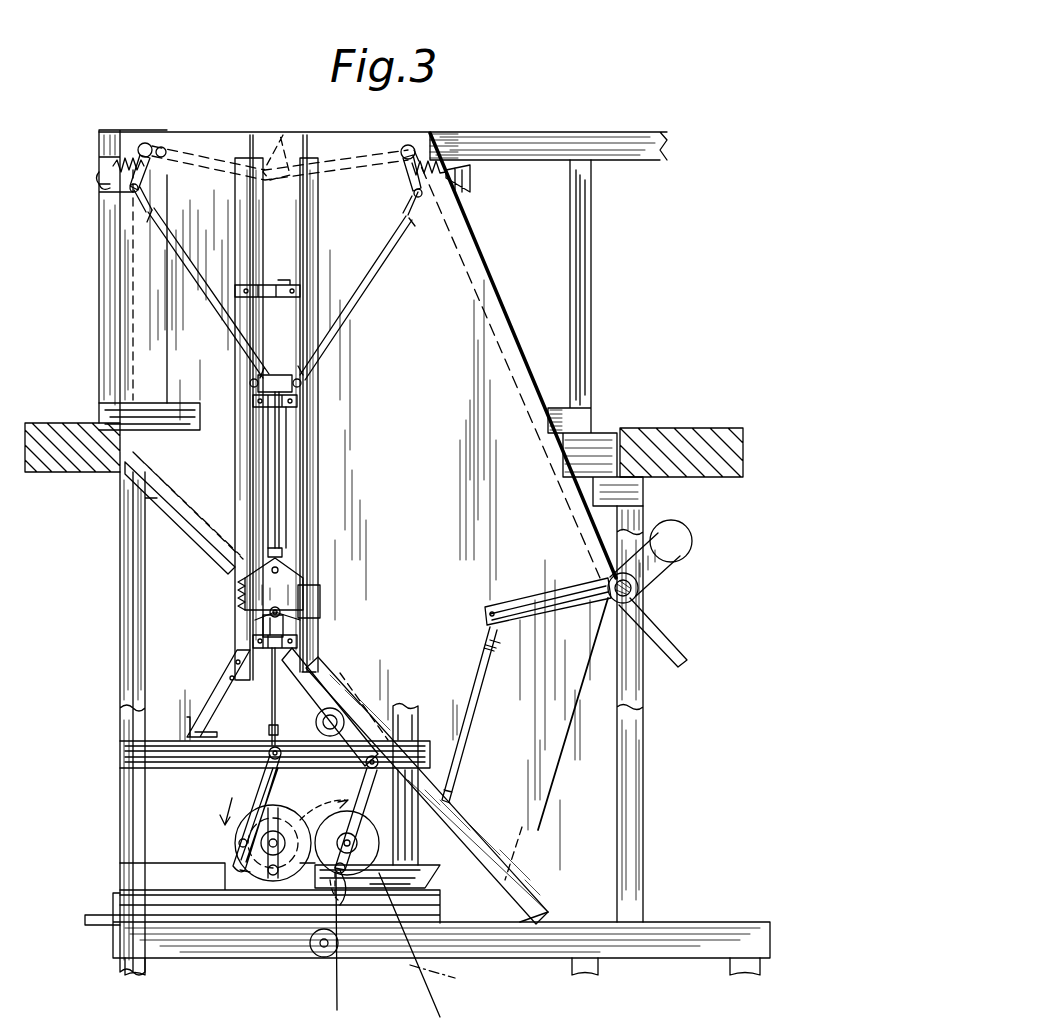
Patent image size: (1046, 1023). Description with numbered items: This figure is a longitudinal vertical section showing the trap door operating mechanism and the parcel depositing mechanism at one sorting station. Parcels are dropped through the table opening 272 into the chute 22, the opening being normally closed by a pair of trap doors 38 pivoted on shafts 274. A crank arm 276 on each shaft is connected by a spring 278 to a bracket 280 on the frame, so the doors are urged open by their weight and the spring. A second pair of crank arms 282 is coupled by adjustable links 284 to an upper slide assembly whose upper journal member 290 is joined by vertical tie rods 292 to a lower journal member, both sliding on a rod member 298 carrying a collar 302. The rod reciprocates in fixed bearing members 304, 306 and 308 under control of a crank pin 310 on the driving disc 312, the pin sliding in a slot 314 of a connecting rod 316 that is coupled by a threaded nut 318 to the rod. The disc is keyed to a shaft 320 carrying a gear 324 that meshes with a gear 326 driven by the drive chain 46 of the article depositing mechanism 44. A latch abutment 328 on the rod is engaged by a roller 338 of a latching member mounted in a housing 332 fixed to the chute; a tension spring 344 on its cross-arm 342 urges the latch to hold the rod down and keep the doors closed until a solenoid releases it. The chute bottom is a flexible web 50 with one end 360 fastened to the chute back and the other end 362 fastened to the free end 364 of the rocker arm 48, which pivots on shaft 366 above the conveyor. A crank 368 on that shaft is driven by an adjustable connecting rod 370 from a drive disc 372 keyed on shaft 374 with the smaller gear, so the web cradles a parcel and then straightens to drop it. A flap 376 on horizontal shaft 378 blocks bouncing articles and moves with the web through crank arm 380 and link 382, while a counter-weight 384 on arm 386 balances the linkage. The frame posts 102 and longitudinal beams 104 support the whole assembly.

The chute 22 is at (500, 312).
The trap doors 38 is at (285, 136).
The article depositing mechanism 44 is at (565, 783).
The drive chain 46 is at (393, 959).
The rocker arm 48 is at (500, 895).
The flexible web 50 is at (360, 664).
The posts 102 is at (120, 590).
The longitudinal horizontal beams 104 is at (680, 925).
The opening 272 is at (250, 112).
The shafts 274 is at (145, 143).
The crank arm 276 is at (185, 122).
The spring 278 is at (113, 166).
The bracket 280 is at (99, 182).
The crank arms 282 is at (147, 182).
The adjustable links 284 is at (193, 287).
The upper journal member 290 is at (295, 386).
The vertical tie rods 292 is at (265, 440).
The rod member 298 is at (280, 474).
The collar 302 is at (320, 600).
The fixed bearing member 304 is at (300, 290).
The fixed bearing member 306 is at (298, 402).
The fixed bearing member 308 is at (298, 641).
The crank pin 310 is at (239, 843).
The driving disc 312 is at (325, 820).
The slot 314 is at (250, 800).
The connecting rod 316 is at (265, 780).
The threaded nut 318 is at (270, 733).
The shaft 320 is at (272, 876).
The gear 324 is at (255, 882).
The gear 326 is at (335, 896).
The latch abutment 328 is at (262, 628).
The housing 332 is at (303, 585).
The roller 338 is at (262, 616).
The cross-arm 342 is at (285, 552).
The tension spring 344 is at (240, 590).
The web end 360 is at (150, 475).
The web end 362 is at (525, 822).
The free end of rocker arm 364 is at (535, 905).
The shaft 366 is at (322, 712).
The crank 368 is at (350, 730).
The connecting rod 370 is at (364, 790).
The drive disc 372 is at (365, 882).
The shaft 374 is at (377, 878).
The flap 376 is at (680, 652).
The horizontal shaft 378 is at (640, 592).
The crank arm 380 is at (555, 578).
The link 382 is at (478, 712).
The counter-weight 384 is at (680, 530).
The arm 386 is at (665, 570).